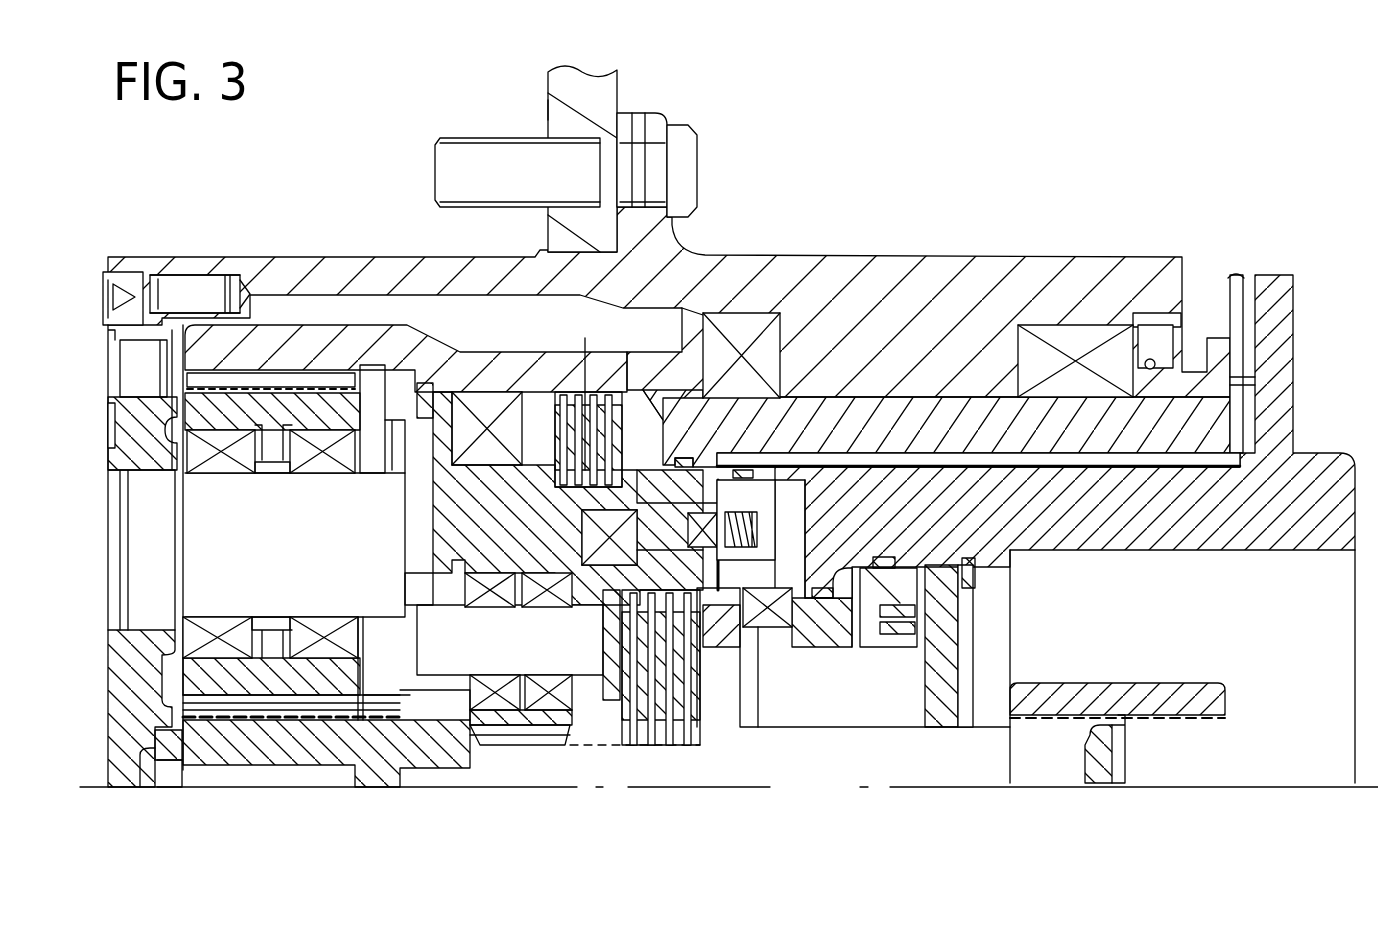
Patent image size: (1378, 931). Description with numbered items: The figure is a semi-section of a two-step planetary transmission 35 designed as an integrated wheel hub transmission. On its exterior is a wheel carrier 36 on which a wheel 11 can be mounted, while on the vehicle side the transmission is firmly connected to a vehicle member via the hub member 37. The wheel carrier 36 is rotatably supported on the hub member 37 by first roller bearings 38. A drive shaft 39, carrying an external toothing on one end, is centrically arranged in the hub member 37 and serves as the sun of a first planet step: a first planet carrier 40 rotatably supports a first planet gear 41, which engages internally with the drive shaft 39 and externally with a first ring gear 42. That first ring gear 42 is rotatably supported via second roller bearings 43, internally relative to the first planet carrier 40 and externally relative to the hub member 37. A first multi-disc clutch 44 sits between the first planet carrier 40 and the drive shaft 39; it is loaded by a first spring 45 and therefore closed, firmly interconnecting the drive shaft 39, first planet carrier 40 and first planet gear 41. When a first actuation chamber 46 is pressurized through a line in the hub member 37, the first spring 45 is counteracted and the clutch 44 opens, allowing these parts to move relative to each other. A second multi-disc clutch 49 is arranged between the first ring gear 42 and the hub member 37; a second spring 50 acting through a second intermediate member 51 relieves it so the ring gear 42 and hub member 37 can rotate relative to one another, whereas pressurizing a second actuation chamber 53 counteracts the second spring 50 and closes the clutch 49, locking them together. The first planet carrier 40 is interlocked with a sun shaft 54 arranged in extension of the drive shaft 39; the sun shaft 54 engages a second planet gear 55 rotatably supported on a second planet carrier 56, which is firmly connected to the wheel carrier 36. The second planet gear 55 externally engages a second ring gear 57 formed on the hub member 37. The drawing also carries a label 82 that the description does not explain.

The wheel 11 is at (590, 72).
The two-step planetary transmission 35 is at (1268, 213).
The wheel carrier 36 is at (332, 270).
The hub member 37 is at (1290, 490).
The first roller bearings 38 is at (1070, 330).
The drive shaft 39 is at (1038, 768).
The first planet carrier 40 is at (592, 578).
The first planet gear 41 is at (545, 727).
The first ring gear 42 is at (470, 505).
The second roller bearings 43 is at (490, 400).
The first multi-disc clutch 44 is at (698, 705).
The first spring 45 is at (890, 634).
The first actuation chamber 46 is at (845, 600).
The second multi-disc clutch 49 is at (626, 419).
The second spring 50 is at (745, 518).
The second intermediate member 51 is at (720, 455).
The second actuation chamber 53 is at (790, 455).
The sun shaft 54 is at (304, 760).
The second planet gear 55 is at (233, 690).
The second planet carrier 56 is at (127, 703).
The second ring gear 57 is at (330, 336).
The sleeve 82 is at (985, 458).